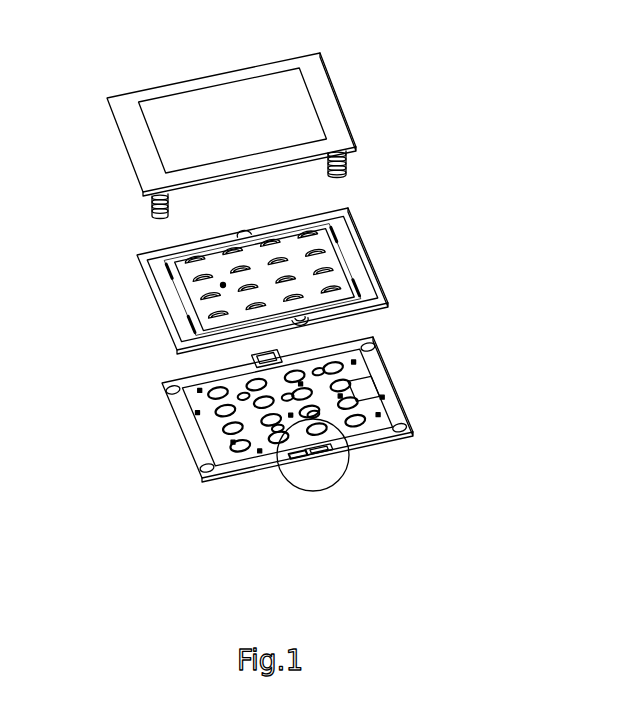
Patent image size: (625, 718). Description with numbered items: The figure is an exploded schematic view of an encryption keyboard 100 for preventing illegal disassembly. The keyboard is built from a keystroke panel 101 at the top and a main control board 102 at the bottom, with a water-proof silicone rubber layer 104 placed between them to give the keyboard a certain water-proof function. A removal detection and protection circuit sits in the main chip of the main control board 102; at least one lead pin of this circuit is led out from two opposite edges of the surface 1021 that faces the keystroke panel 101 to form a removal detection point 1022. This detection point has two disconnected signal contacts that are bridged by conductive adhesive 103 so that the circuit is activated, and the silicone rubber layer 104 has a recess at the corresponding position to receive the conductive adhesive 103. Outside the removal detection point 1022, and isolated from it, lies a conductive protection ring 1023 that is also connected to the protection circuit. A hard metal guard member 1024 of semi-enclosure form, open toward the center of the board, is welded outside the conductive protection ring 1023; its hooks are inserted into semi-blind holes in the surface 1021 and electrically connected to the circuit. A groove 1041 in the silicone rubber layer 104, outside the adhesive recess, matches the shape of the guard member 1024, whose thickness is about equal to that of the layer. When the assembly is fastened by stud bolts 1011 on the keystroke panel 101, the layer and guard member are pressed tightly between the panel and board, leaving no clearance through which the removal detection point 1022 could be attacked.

The encryption keyboard 100 is at (117, 28).
The keystroke panel 101 is at (325, 103).
The stud bolts 1011 is at (333, 165).
The main control board 102 is at (393, 372).
The surface 1021 is at (212, 425).
The removal detection point 1022 is at (327, 455).
The conductive protection ring 1023 is at (303, 457).
The hard metal guard member 1024 is at (278, 462).
The conductive adhesive 103 is at (242, 237).
The water-proof silicone rubber layer 104 is at (308, 263).
The groove 1041 is at (297, 322).